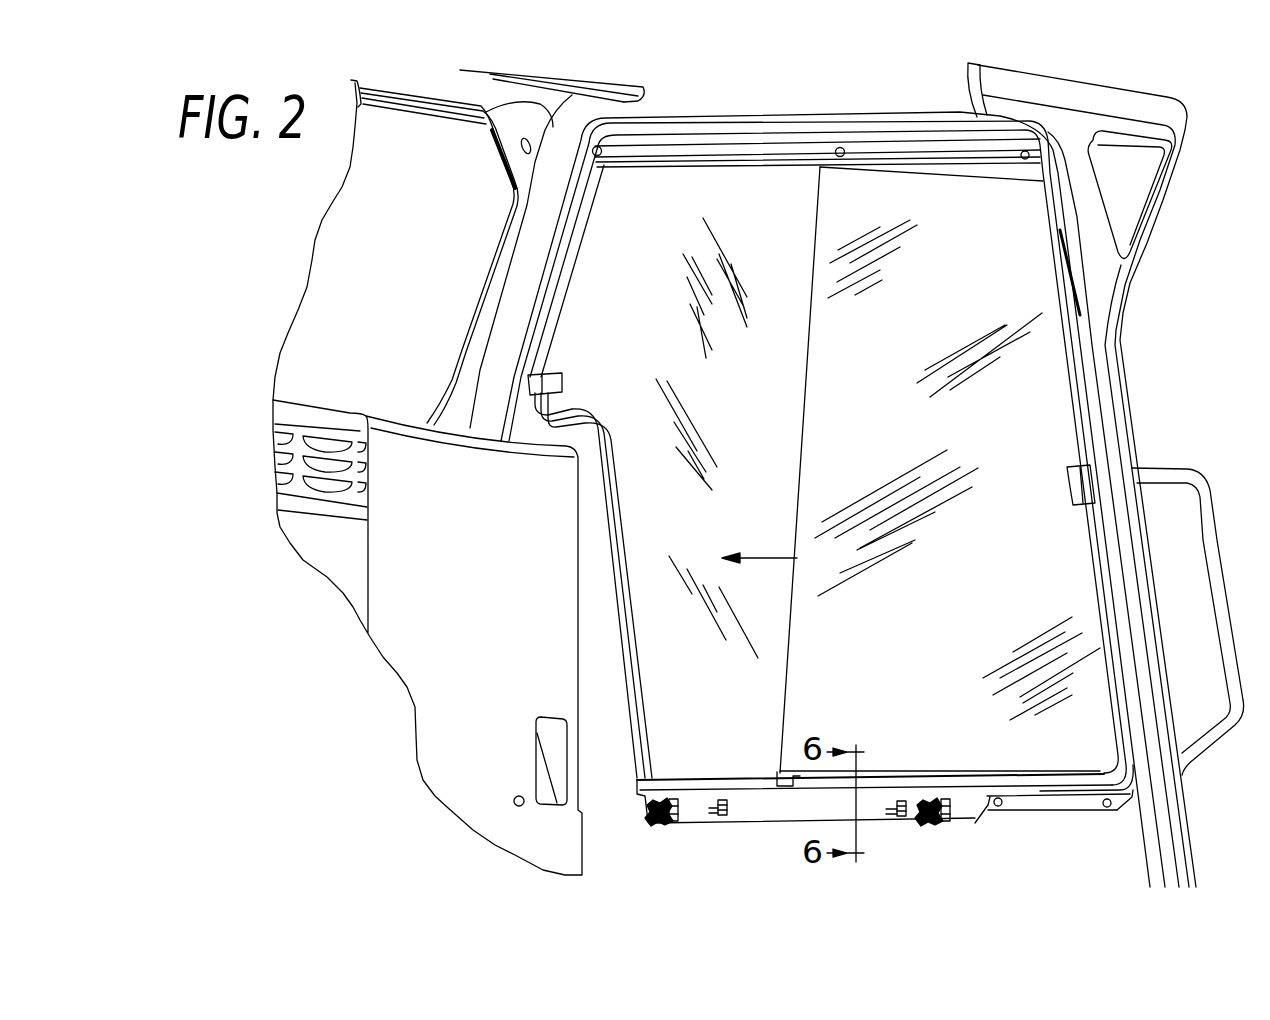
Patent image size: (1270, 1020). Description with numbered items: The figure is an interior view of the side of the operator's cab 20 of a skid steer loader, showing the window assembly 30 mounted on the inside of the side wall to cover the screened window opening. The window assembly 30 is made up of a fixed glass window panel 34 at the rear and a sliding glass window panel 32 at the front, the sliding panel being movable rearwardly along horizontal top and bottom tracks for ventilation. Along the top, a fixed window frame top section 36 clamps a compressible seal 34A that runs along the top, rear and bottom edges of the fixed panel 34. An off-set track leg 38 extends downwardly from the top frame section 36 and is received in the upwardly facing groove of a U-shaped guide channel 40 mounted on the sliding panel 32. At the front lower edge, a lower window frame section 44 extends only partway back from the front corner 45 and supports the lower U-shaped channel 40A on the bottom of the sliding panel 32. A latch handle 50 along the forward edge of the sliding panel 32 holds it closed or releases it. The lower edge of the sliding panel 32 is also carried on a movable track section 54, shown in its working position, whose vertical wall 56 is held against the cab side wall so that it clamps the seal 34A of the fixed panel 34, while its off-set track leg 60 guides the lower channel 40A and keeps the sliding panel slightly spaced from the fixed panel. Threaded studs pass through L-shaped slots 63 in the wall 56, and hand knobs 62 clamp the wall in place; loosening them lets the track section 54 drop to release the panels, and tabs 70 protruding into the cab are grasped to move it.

The operator's cab 20 is at (1145, 317).
The window assembly 30 is at (613, 278).
The sliding glass window panel 32 is at (833, 452).
The fixed glass window panel 34 is at (773, 345).
The compressible seal 34A is at (568, 342).
The window frame top section 36 is at (746, 148).
The off-set track leg 38 is at (683, 163).
The guide channel 40 is at (918, 172).
The lower U-shaped channel 40A is at (943, 768).
The lower window frame section 44 is at (1053, 805).
The front corner 45 is at (1128, 803).
The latch handle 50 is at (1067, 480).
The movable track section 54 is at (792, 815).
The vertical wall 56 is at (762, 808).
The track leg 60 is at (757, 782).
The hand knob 62 is at (652, 800).
The L-shaped slot 63 is at (685, 805).
The tab 70 is at (713, 810).